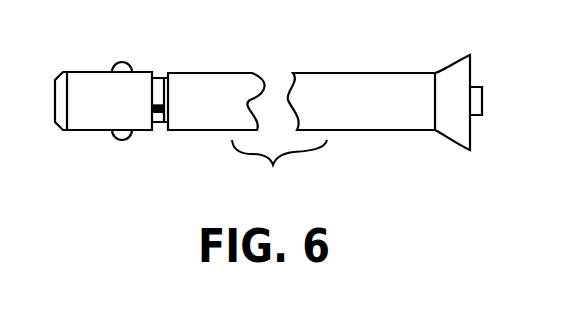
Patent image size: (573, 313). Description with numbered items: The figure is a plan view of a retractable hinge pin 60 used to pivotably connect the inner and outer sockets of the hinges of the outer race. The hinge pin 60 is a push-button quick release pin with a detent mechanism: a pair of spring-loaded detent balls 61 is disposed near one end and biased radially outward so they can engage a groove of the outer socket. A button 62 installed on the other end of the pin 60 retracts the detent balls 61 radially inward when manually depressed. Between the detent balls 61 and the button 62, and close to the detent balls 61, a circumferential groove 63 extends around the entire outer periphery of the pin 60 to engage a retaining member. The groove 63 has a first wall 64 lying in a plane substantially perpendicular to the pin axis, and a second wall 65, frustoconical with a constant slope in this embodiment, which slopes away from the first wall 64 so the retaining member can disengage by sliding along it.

The hinge pin 60 is at (388, 72).
The detent balls 61 is at (118, 60).
The button 62 is at (483, 101).
The circumferential groove 63 is at (159, 76).
The first wall 64 is at (160, 108).
The second wall 65 is at (166, 124).